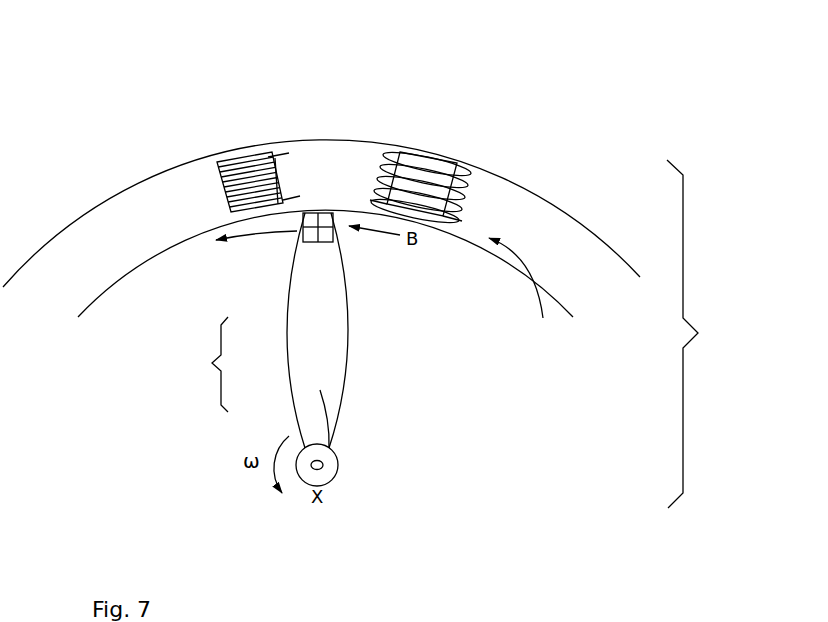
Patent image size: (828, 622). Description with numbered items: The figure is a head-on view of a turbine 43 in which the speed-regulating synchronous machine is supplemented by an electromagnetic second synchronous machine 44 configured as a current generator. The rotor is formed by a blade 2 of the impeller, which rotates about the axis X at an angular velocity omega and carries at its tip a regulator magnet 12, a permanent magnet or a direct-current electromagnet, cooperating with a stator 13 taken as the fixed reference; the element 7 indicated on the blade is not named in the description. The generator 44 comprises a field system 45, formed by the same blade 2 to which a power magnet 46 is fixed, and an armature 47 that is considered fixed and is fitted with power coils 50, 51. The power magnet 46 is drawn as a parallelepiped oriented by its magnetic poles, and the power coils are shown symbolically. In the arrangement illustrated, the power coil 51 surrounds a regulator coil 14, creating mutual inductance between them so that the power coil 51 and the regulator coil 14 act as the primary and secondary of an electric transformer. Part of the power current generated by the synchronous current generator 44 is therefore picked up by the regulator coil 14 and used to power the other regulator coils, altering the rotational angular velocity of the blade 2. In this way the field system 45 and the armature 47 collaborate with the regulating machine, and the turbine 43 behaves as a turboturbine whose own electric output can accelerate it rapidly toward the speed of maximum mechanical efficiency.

The blade 2 is at (349, 338).
The pendulum arm 7 is at (353, 400).
The regulator magnet 12 is at (331, 255).
The stator 13 is at (321, 190).
The regulator coil 14 is at (477, 155).
The turbine 43 is at (696, 334).
The electromagnetic second synchronous machine 44 is at (396, 308).
The field system 45 is at (206, 364).
The power magnet 46 is at (339, 240).
The armature 47 is at (328, 159).
The power coil 50 is at (219, 192).
The power coil 51 is at (463, 206).